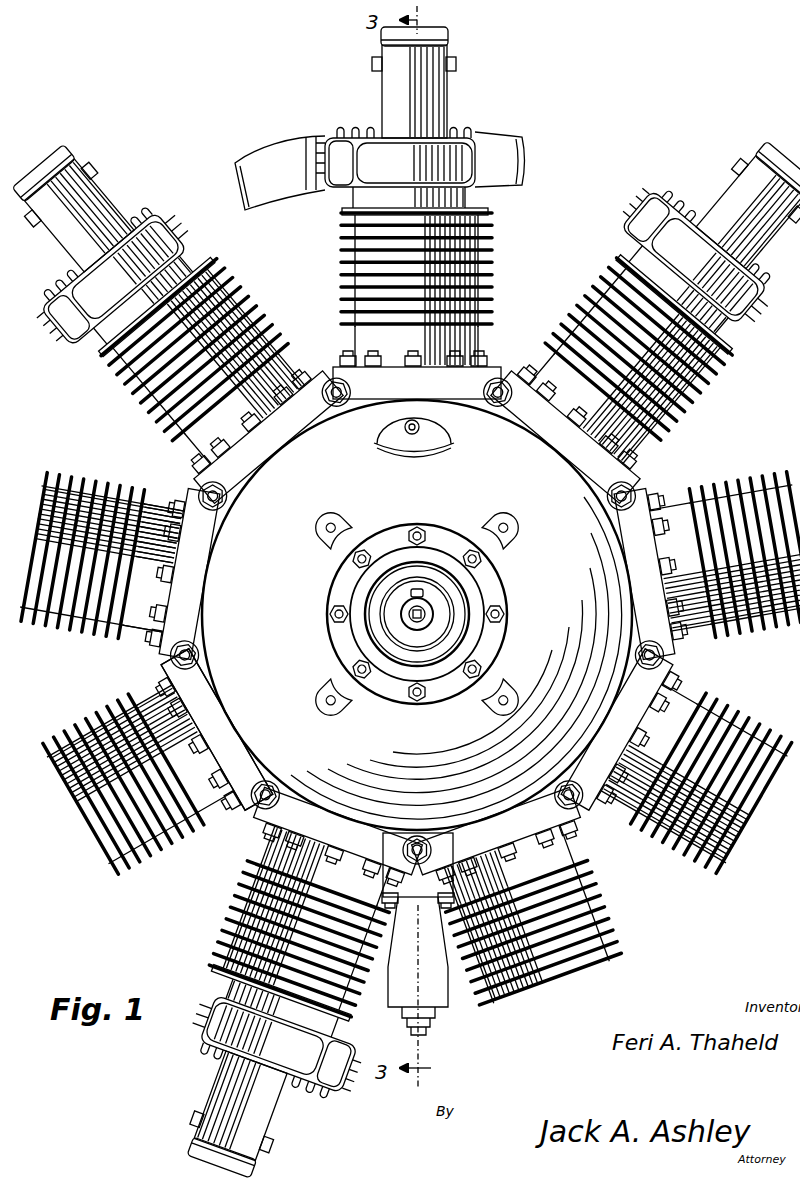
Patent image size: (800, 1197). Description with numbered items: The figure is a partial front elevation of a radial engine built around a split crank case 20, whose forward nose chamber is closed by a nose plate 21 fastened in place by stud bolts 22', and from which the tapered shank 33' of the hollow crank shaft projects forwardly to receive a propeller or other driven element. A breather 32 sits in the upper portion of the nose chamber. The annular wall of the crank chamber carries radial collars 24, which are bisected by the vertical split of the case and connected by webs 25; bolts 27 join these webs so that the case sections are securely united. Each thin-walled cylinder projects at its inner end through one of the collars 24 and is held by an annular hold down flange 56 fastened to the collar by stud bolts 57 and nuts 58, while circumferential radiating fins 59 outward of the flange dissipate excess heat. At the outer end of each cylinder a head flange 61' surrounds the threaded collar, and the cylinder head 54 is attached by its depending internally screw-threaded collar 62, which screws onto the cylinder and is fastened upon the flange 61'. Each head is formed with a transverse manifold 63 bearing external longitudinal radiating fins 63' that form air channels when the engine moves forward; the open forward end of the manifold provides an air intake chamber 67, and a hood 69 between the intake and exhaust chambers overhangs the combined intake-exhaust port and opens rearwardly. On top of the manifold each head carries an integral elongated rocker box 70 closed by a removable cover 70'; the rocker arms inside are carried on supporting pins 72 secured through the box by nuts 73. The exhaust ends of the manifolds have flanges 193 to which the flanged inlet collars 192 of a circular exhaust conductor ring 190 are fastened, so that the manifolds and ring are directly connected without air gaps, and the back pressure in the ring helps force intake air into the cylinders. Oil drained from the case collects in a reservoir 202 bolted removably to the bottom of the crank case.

The split crank case 20 is at (636, 485).
The nose plate 21 is at (504, 581).
The stud bolts 22' is at (417, 601).
The radial collars 24 is at (499, 371).
The webs 25 is at (193, 484).
The bolts 27 is at (334, 392).
The breather 32 is at (441, 433).
The tapered shank 33' is at (379, 614).
The cylinder head 54 is at (449, 97).
The hold down flange 56 is at (650, 459).
The stud bolts 57 is at (479, 352).
The nuts 58 is at (402, 357).
The radiating fins 59 is at (493, 253).
The head flange 61' is at (440, 205).
The internally screw-threaded collar 62 is at (172, 268).
The manifold 63 is at (772, 307).
The radiating fins 63' is at (165, 212).
The air intake chamber 67 is at (760, 322).
The hood 69 is at (697, 253).
The rocker box 70 is at (309, 603).
The removable cover 70' is at (317, 599).
The supporting pins 72 is at (456, 64).
The nuts 73 is at (372, 63).
The exhaust conductor ring 190 is at (512, 134).
The flanged inlet collars 192 is at (309, 190).
The flanges 193 is at (330, 138).
The reservoir 202 is at (392, 997).